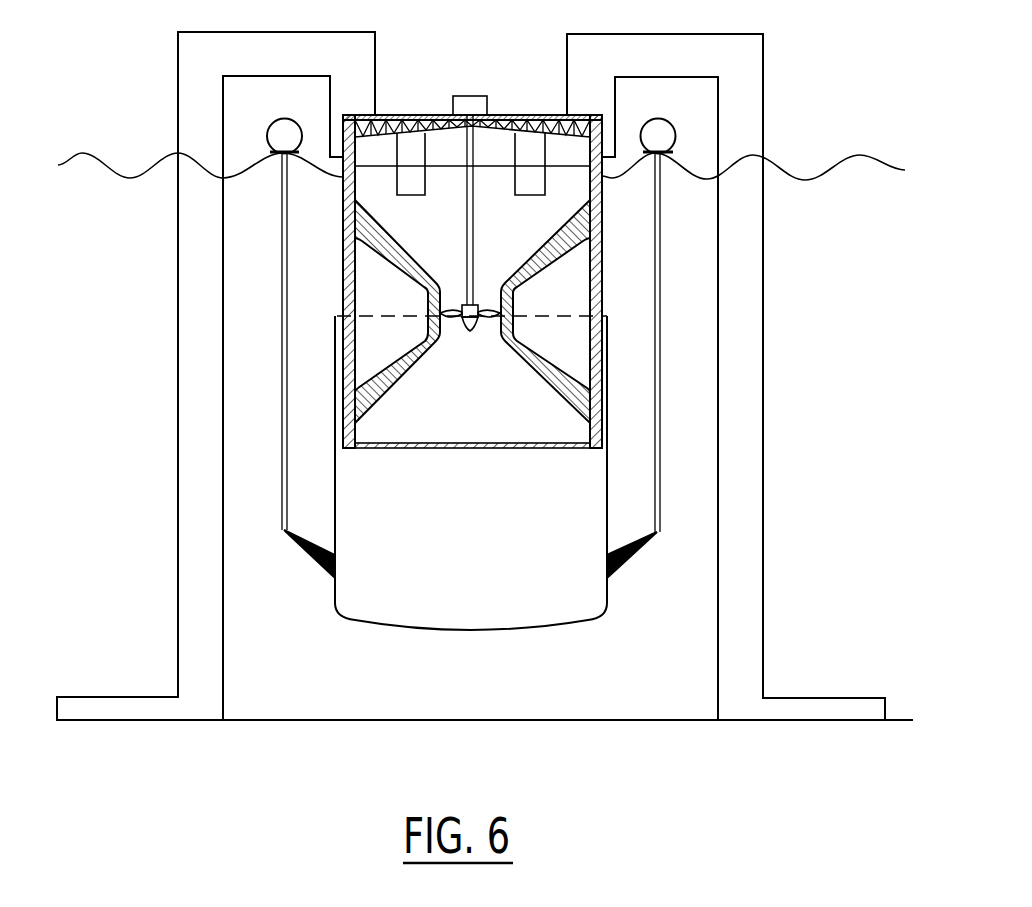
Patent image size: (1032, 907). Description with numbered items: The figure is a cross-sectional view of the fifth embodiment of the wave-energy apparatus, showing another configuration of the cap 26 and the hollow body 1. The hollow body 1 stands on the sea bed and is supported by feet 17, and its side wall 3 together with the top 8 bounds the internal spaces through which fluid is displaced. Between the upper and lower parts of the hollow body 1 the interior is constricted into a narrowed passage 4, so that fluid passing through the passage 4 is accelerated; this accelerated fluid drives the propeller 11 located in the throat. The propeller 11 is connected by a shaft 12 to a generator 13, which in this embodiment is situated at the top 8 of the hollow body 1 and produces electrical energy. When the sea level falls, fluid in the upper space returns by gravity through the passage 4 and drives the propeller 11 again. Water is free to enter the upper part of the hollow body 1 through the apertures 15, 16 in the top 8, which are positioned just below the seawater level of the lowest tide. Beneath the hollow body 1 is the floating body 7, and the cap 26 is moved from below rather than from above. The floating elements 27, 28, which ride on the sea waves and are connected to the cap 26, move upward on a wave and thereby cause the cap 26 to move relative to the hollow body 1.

The hollow body 1 is at (464, 354).
The wall 3 is at (343, 205).
The narrowed passage 4 is at (482, 350).
The floating body 7 is at (327, 588).
The top 8 is at (498, 115).
The propeller 11 is at (487, 307).
The shaft 12 is at (467, 232).
The generator 13 is at (453, 100).
The aperture 15 is at (410, 148).
The aperture 16 is at (532, 152).
The feet 17 is at (195, 612).
The cap 26 is at (453, 630).
The floating element 27 is at (283, 127).
The floating element 28 is at (660, 133).